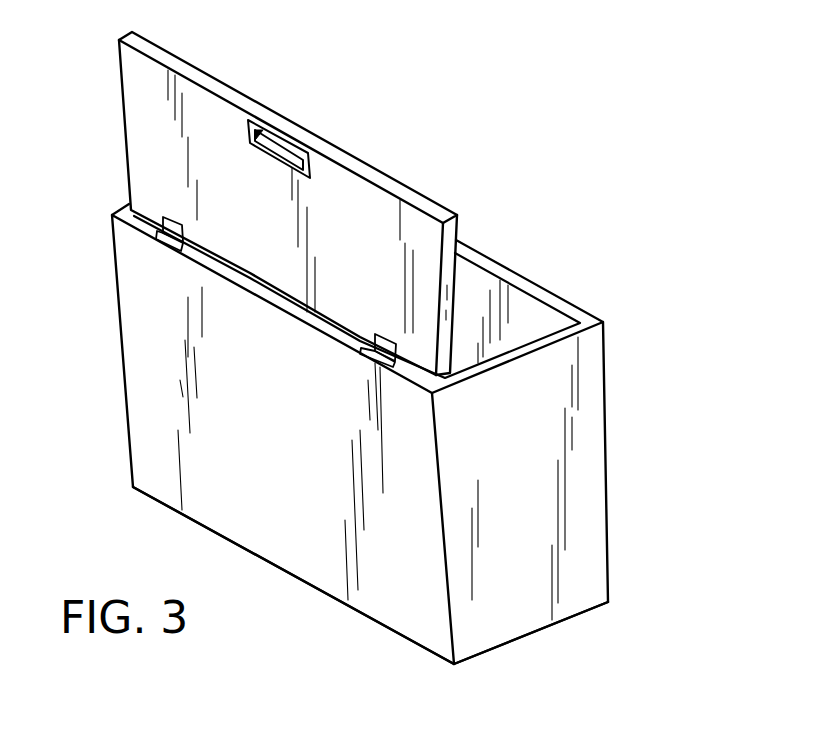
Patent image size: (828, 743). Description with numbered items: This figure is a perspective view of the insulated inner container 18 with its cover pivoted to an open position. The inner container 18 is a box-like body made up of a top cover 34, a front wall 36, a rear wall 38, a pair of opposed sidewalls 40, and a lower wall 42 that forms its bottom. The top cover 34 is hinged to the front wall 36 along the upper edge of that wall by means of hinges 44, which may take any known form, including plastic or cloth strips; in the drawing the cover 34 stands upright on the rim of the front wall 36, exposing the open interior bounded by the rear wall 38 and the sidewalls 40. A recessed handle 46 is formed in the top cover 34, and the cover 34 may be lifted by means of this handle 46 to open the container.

The insulated inner container 18 is at (540, 221).
The top cover 34 is at (153, 136).
The front wall 36 is at (152, 450).
The rear wall 38 is at (537, 313).
The sidewall 40 is at (593, 422).
The lower wall 42 is at (517, 648).
The hinge 44 is at (370, 362).
The recessed handle 46 is at (312, 160).